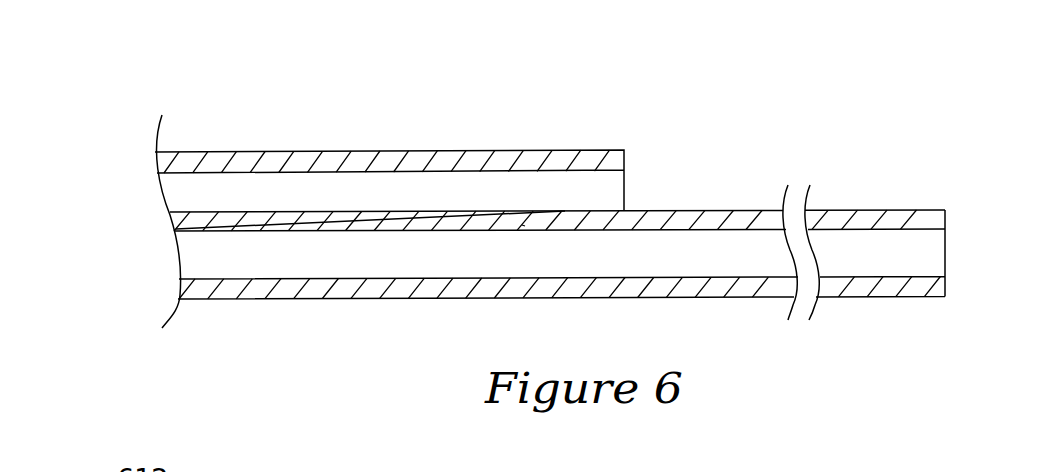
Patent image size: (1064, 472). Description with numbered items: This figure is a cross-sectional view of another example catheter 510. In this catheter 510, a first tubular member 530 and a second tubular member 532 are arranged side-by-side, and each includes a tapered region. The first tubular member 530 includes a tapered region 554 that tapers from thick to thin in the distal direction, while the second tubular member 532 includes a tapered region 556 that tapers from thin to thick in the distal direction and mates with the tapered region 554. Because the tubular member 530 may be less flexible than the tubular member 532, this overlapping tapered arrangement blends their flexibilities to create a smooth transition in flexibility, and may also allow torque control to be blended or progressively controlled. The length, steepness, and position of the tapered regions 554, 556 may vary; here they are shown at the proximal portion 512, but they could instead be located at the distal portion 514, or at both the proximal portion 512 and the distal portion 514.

The catheter 510 is at (322, 107).
The proximal portion 512 is at (210, 142).
The distal portion 514 is at (875, 210).
The first tubular member 530 is at (502, 160).
The second tubular member 532 is at (688, 217).
The tapered region 554 is at (183, 222).
The tapered region 556 is at (522, 226).